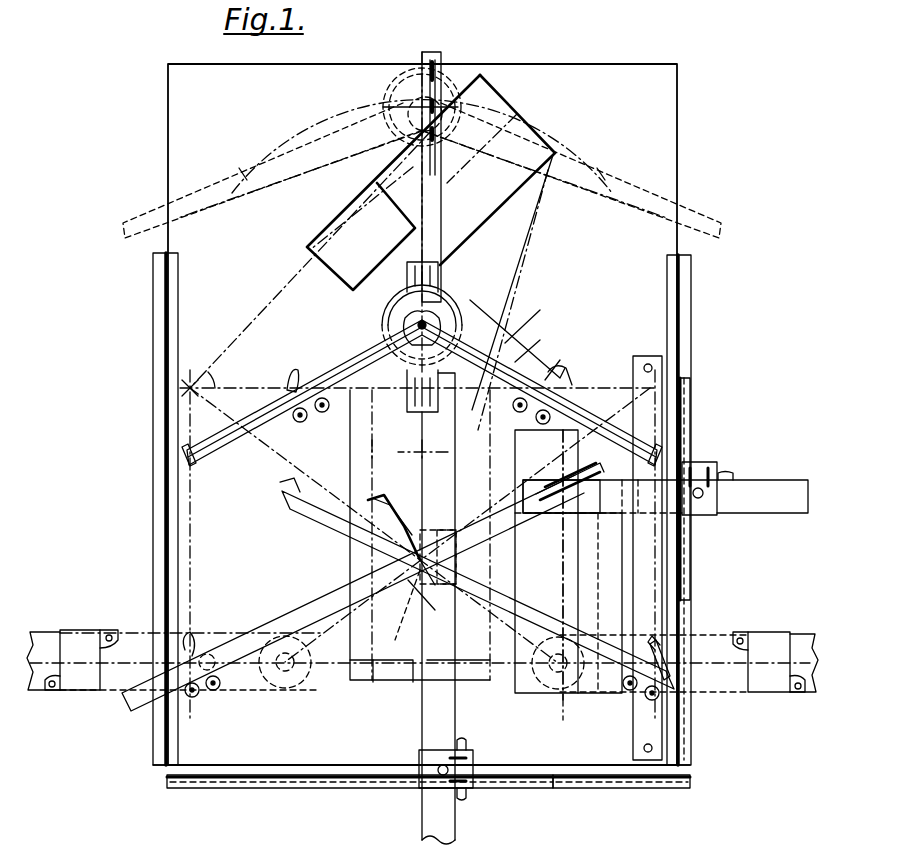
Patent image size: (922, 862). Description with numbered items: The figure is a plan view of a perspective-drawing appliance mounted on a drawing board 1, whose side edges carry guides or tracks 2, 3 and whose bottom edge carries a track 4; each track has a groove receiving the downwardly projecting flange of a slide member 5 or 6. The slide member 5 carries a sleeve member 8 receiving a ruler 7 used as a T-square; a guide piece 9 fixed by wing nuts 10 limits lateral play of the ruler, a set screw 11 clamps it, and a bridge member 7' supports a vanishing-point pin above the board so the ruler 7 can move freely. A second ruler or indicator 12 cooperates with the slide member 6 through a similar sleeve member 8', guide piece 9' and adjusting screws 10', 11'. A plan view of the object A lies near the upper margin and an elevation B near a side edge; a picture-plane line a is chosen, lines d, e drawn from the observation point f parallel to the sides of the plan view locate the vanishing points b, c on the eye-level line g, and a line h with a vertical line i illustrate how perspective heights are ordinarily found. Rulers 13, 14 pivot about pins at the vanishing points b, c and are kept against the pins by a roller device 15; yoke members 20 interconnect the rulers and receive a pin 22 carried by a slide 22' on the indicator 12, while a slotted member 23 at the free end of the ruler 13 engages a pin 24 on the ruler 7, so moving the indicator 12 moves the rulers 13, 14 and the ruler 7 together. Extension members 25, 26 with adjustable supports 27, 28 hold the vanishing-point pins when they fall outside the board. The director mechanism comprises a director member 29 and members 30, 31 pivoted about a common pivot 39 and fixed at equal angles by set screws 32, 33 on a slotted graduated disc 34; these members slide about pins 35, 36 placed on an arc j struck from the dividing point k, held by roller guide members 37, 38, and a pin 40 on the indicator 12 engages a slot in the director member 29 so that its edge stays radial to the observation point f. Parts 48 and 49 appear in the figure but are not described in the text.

The drawing board 1 is at (670, 133).
The track 2 is at (686, 305).
The track 3 is at (160, 296).
The track 4 is at (600, 790).
The slide member 5 is at (690, 398).
The slide member 6 is at (492, 788).
The ruler 7 is at (665, 482).
The bridge member 7' is at (682, 558).
The sleeve member 8 is at (705, 462).
The guide piece 9 is at (743, 447).
The wing nuts 10 is at (721, 458).
The set screw 11 is at (718, 511).
The indicator ruler 12 is at (432, 712).
The ruler 13 is at (322, 607).
The ruler 14 is at (280, 502).
The roller guide device 15 is at (210, 694).
The yoke members 20 is at (440, 532).
The pin 22 is at (394, 523).
The slide 22' is at (406, 604).
The slotted member 23 is at (542, 485).
The pin 24 is at (612, 440).
The extension member 25 is at (128, 632).
The extension member 26 is at (740, 633).
The adjustable support 27 is at (72, 688).
The adjustable support 28 is at (758, 692).
The director member 29 is at (444, 203).
The adjustable member 30 is at (262, 402).
The adjustable member 31 is at (540, 344).
The set screw 32 is at (392, 342).
The set screw 33 is at (474, 312).
The slotted graduated disc 34 is at (422, 325).
The pin 35 is at (300, 385).
The pin 36 is at (548, 376).
The roller guide member 37 is at (314, 414).
The roller guide member 38 is at (535, 420).
The common pivot 39 is at (428, 320).
The pin 40 is at (415, 408).
The arm end cap 48 is at (204, 456).
The connecting rod 49 is at (481, 392).
The sleeve member 8' is at (422, 788).
The guide piece 9' is at (471, 751).
The adjusting screws 10' is at (485, 755).
The adjusting screw 11' is at (442, 797).
The plan view of the object A is at (506, 108).
The elevation of the object B is at (580, 570).
The picture plane line a is at (216, 370).
The vanishing point b is at (192, 650).
The vanishing point c is at (672, 630).
The line d is at (282, 486).
The line e is at (505, 540).
The observation point f is at (373, 686).
The eye-level line g is at (290, 668).
The line h is at (528, 318).
The vertical line i is at (580, 540).
The arc j is at (513, 300).
The dividing point k is at (424, 476).